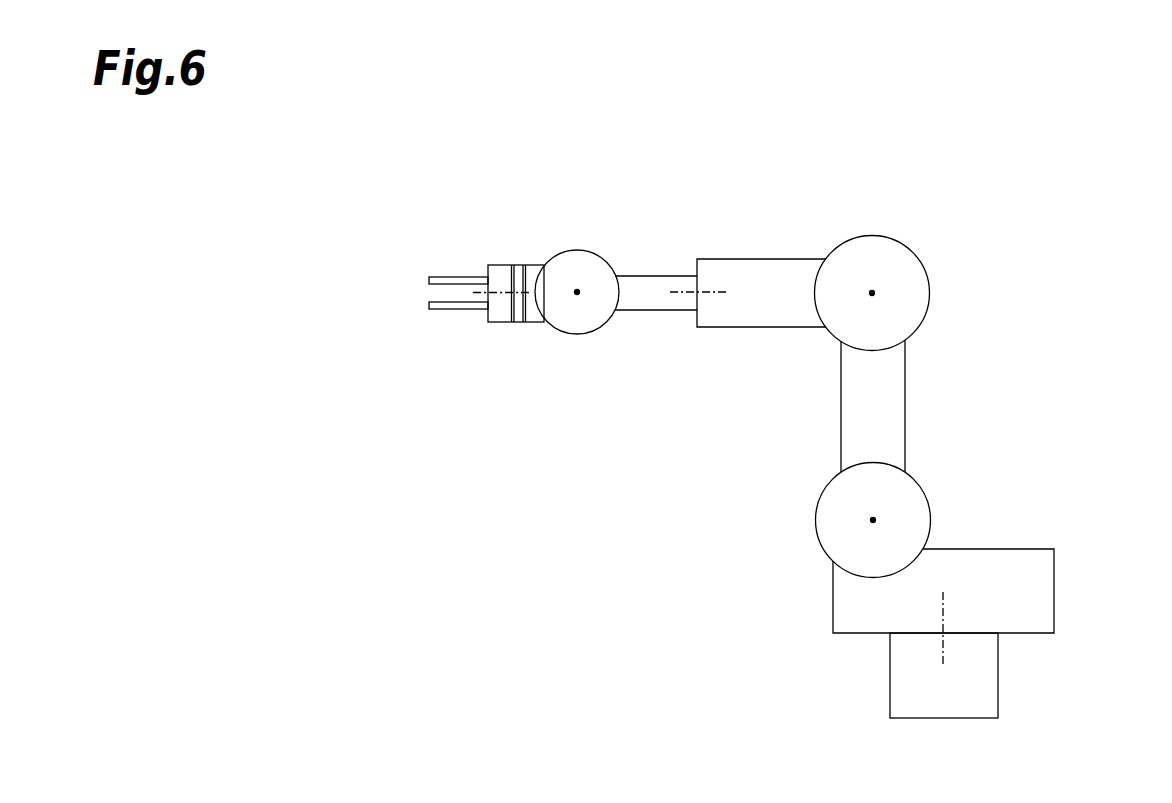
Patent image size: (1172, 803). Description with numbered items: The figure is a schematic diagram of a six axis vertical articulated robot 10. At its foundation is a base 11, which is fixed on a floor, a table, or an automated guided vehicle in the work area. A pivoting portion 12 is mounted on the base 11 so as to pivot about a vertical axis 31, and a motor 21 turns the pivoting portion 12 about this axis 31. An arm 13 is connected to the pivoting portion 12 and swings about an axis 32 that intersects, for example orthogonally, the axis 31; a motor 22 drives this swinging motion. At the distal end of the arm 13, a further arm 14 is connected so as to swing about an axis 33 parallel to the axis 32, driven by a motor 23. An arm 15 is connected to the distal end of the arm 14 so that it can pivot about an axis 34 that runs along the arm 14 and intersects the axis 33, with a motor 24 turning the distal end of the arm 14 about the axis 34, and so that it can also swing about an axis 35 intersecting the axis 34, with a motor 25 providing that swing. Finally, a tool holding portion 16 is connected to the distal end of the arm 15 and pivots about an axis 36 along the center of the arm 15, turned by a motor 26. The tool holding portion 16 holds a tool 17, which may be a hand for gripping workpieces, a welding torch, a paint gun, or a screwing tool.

The robot 10 is at (1104, 181).
The base 11 is at (890, 675).
The motor 21 is at (888, 680).
The pivoting portion 12 is at (1018, 548).
The motor 22 is at (817, 535).
The arm 13 is at (907, 410).
The motor 23 is at (897, 240).
The arm 14 is at (766, 259).
The motor 24 is at (768, 258).
The motor 25 is at (617, 312).
The arm 15 is at (579, 263).
The motor 26 is at (535, 264).
The tool holding portion 16 is at (523, 263).
The tool 17 is at (502, 263).
The axis 31 is at (945, 657).
The axis 32 is at (875, 519).
The axis 33 is at (877, 293).
The axis 34 is at (705, 293).
The axis 35 is at (579, 295).
The axis 36 is at (505, 298).